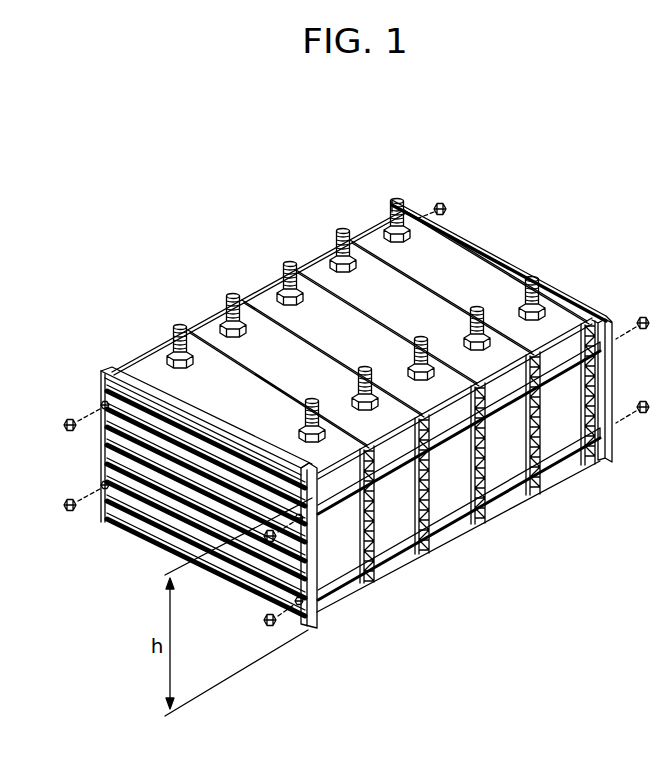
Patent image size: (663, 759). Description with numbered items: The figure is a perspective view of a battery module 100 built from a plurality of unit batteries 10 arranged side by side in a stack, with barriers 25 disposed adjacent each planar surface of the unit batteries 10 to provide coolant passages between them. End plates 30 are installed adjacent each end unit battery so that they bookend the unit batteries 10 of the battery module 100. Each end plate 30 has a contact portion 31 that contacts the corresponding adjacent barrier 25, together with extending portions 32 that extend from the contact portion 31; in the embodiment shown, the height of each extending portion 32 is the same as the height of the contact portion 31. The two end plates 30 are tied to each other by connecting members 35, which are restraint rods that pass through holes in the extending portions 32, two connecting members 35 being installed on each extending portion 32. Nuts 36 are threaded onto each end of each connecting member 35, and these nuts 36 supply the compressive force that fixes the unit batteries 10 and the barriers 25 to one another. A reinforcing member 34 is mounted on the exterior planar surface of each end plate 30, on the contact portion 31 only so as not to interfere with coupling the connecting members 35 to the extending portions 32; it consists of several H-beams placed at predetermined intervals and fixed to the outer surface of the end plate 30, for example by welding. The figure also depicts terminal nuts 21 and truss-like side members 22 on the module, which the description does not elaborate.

The battery module 100 is at (245, 212).
The unit battery 10 is at (402, 583).
The terminal / nut 21 is at (178, 333).
The side plate (truss member) 22 is at (423, 549).
The barrier 25 is at (257, 300).
The end plate 30 is at (100, 382).
The contact portion 31 is at (104, 368).
The extending portion 32 is at (104, 396).
The reinforcing member 34 is at (104, 465).
The connecting member 35 is at (517, 489).
The nut 36 is at (63, 424).